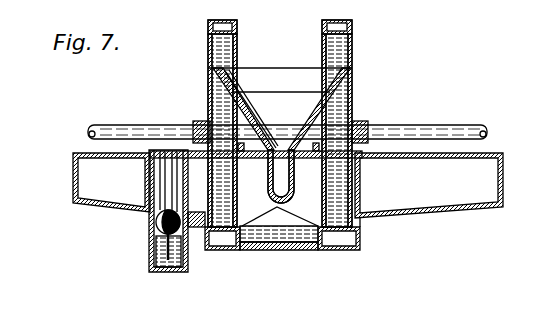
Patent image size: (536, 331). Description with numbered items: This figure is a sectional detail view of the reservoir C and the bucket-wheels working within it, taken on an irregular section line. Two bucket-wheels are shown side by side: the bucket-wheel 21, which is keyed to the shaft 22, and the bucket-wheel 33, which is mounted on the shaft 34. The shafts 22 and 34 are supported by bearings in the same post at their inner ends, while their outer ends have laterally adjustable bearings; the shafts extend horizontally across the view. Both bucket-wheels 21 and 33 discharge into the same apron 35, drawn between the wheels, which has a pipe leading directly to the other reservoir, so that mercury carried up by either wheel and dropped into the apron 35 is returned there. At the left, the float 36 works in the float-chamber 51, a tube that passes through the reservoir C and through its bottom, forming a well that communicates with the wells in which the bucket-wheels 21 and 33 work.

The bucket-wheel 33 is at (208, 42).
The bucket-wheel 21 is at (352, 45).
The apron 35 is at (280, 135).
The shaft 34 is at (160, 125).
The shaft 22 is at (418, 125).
The reservoir C is at (288, 185).
The float 36 is at (160, 216).
The float-chamber 51 is at (150, 260).